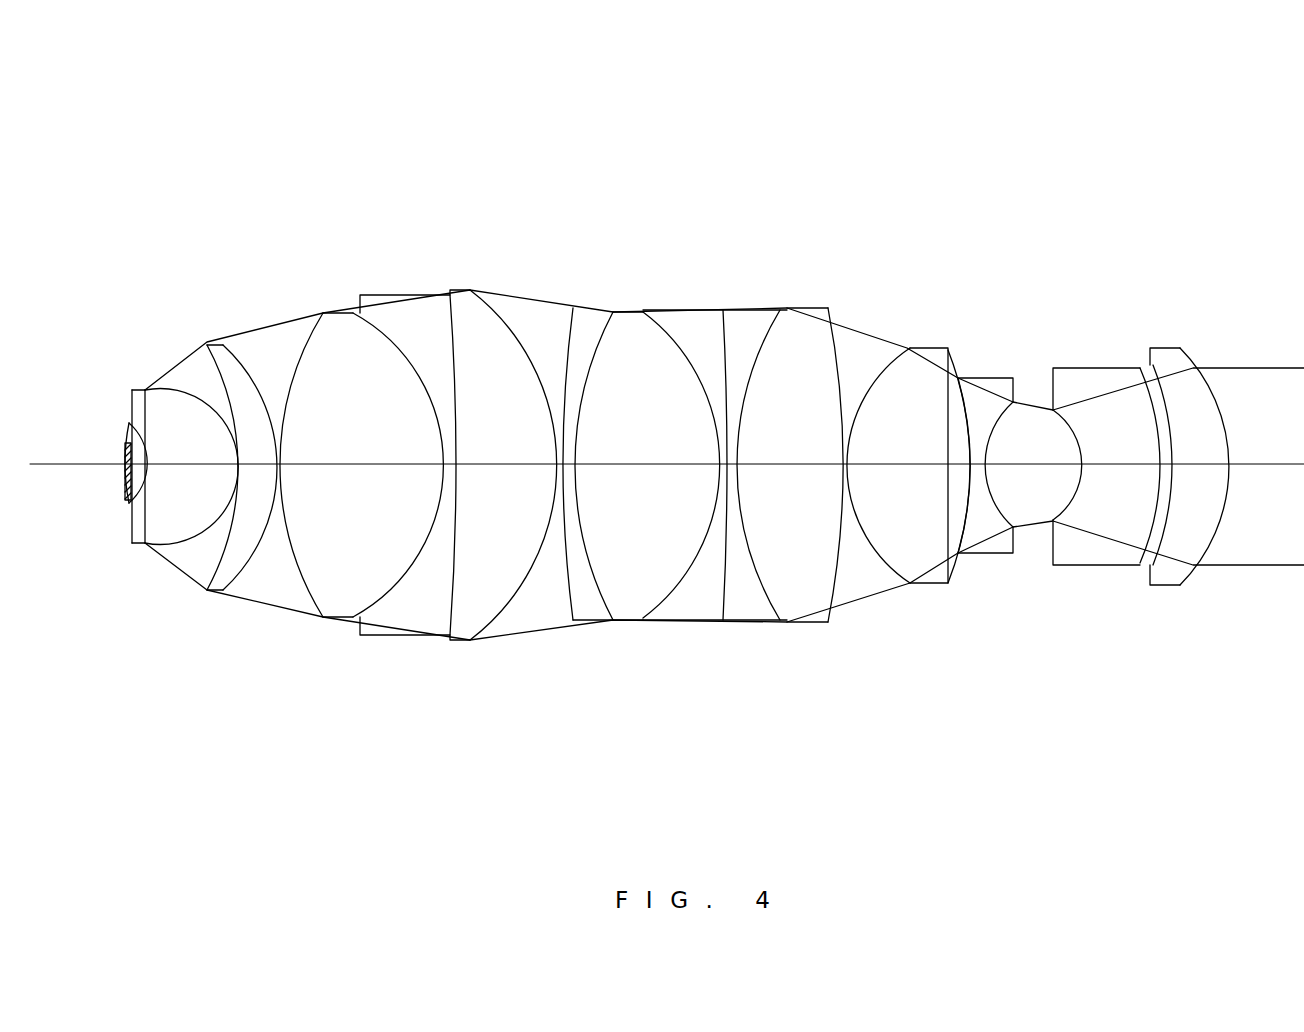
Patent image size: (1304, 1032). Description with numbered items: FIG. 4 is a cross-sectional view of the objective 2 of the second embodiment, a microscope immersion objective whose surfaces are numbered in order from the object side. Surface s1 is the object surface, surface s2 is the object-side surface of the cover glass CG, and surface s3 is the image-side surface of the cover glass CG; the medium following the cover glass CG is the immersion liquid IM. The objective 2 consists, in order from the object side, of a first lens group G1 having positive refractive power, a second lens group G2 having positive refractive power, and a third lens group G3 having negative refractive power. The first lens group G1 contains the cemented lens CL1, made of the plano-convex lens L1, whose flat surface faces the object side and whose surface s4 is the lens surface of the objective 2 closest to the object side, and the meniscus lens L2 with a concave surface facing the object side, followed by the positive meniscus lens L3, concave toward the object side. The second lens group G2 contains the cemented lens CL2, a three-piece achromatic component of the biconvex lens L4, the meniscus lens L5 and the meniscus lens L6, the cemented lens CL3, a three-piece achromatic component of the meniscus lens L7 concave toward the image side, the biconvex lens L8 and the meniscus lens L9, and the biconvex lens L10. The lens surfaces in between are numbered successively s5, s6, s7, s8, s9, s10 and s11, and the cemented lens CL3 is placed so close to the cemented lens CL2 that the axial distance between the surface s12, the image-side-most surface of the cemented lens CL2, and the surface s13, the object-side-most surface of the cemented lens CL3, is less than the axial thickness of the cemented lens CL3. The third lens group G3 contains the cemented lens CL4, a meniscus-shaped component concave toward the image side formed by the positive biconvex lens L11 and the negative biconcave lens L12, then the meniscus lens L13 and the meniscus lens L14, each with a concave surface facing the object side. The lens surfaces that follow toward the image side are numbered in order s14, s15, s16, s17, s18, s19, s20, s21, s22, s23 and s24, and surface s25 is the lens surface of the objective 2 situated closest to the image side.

The objective 2 is at (1284, 73).
The immersion liquid IM is at (139, 503).
The cover glass CG is at (125, 507).
The first lens group G1 is at (270, 747).
The second lens group G2 is at (852, 747).
The third lens group G3 is at (1223, 747).
The cemented lens CL1 is at (220, 687).
The cemented lens CL2 is at (472, 692).
The cemented lens CL3 is at (700, 692).
The cemented lens CL4 is at (1025, 685).
The plano-convex lens L1 is at (150, 545).
The meniscus lens L2 is at (197, 513).
The meniscus lens L3 is at (242, 537).
The biconvex lens L4 is at (336, 580).
The meniscus lens L5 is at (418, 600).
The meniscus lens L6 is at (468, 608).
The meniscus lens L7 is at (595, 600).
The biconvex lens L8 is at (633, 590).
The meniscus lens L9 is at (700, 593).
The biconvex lens L10 is at (800, 588).
The biconvex lens L11 is at (930, 555).
The biconcave lens L12 is at (987, 527).
The meniscus lens L13 is at (1093, 545).
The meniscus lens L14 is at (1180, 543).
The object surface s1 is at (125, 425).
The surface at the object side of the cover glass s2 is at (130, 424).
The surface at the image side of the cover glass s3 is at (128, 392).
The lens surface s4 is at (147, 388).
The lens surface s5 is at (160, 385).
The lens surface s6 is at (172, 388).
The lens surface s7 is at (196, 385).
The lens surface s8 is at (238, 355).
The lens surface s9 is at (292, 372).
The lens surface s10 is at (387, 335).
The lens surface s11 is at (450, 352).
The lens surface s12 is at (498, 316).
The lens surface s13 is at (568, 347).
The lens surface s14 is at (606, 335).
The lens surface s15 is at (683, 358).
The lens surface s16 is at (723, 355).
The lens surface s17 is at (782, 350).
The lens surface s18 is at (832, 355).
The lens surface s19 is at (883, 373).
The lens surface s20 is at (968, 410).
The lens surface s21 is at (1000, 420).
The lens surface s22 is at (1072, 420).
The lens surface s23 is at (1147, 382).
The lens surface s24 is at (1165, 385).
The lens surface s25 is at (1223, 408).